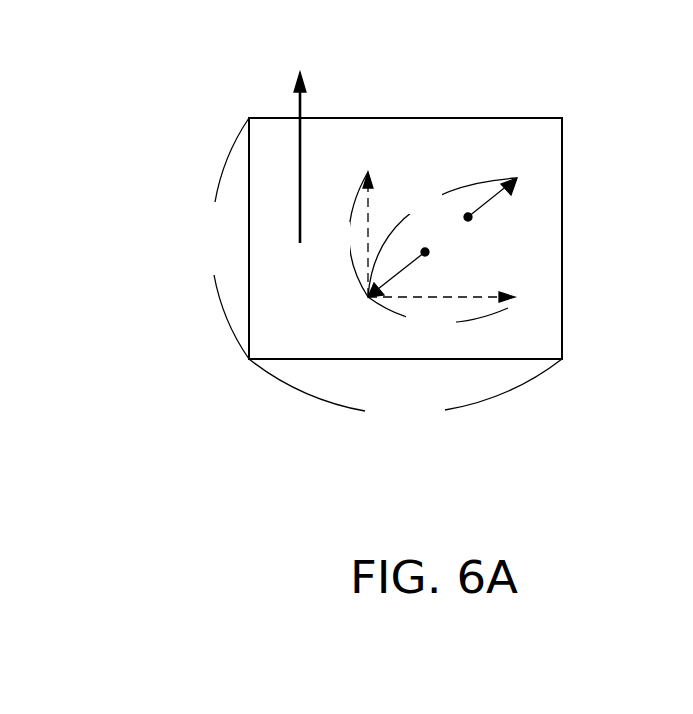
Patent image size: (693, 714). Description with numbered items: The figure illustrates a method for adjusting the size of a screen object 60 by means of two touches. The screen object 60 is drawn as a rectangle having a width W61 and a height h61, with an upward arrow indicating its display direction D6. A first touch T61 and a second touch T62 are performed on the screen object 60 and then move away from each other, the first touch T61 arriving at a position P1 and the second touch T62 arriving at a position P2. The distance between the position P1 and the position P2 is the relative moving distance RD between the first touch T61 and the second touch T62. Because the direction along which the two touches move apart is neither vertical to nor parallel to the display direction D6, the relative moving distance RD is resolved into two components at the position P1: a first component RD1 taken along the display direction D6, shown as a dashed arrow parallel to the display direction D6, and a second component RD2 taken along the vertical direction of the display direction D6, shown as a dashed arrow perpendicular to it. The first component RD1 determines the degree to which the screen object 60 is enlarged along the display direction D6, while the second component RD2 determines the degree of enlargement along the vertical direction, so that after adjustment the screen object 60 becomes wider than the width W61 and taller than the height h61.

The screen object 60 is at (562, 239).
The display direction D6 is at (299, 139).
The height h61 is at (223, 238).
The width W61 is at (405, 393).
The position P1 is at (428, 247).
The position P2 is at (512, 189).
The first touch T61 is at (411, 272).
The second touch T62 is at (482, 236).
The relative moving distance RD is at (442, 237).
The first component RD1 is at (343, 234).
The second component RD2 is at (438, 317).